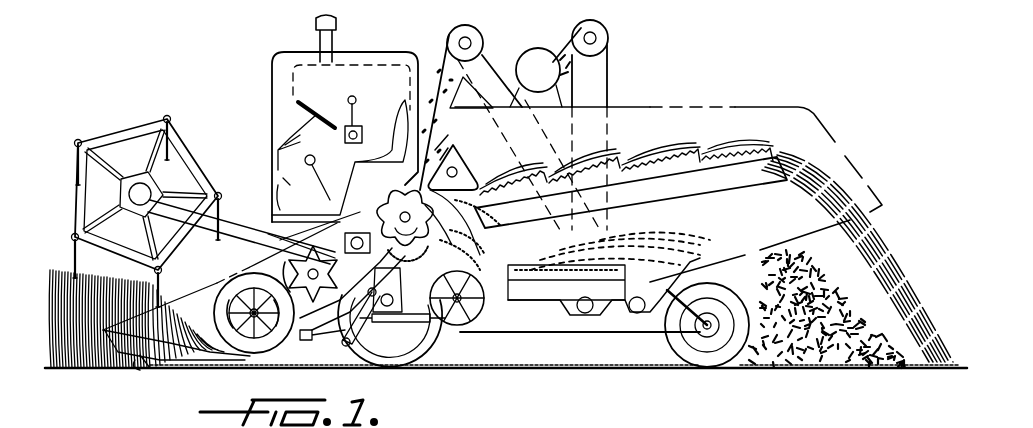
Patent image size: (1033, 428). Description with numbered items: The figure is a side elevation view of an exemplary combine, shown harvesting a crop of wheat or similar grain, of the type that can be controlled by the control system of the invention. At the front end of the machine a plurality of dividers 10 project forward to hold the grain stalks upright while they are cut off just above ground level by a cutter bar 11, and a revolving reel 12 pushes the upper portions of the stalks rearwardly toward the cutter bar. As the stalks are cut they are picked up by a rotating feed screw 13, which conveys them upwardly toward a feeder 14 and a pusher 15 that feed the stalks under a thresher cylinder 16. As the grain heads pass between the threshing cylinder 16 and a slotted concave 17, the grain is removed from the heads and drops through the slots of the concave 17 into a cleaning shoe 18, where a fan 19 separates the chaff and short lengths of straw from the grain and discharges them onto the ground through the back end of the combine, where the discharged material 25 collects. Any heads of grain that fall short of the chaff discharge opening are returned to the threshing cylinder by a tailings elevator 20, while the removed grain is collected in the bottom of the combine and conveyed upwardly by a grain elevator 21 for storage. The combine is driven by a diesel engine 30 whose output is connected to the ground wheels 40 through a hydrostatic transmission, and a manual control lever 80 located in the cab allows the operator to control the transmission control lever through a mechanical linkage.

The dividers 10 is at (105, 366).
The cutter bar 11 is at (145, 368).
The revolving reel 12 is at (104, 125).
The rotating feed screw 13 is at (248, 356).
The feeder 14 is at (285, 240).
The pusher 15 is at (355, 212).
The thresher cylinder 16 is at (468, 168).
The slotted concave 17 is at (468, 248).
The cleaning shoe 18 is at (530, 222).
The fan 19 is at (478, 325).
The tailings elevator 20 is at (482, 50).
The grain elevator 21 is at (610, 62).
The discharged pile 25 is at (477, 425).
The diesel engine 30 is at (374, 62).
The ground wheels 40 is at (428, 360).
The manual control lever 80 is at (350, 110).